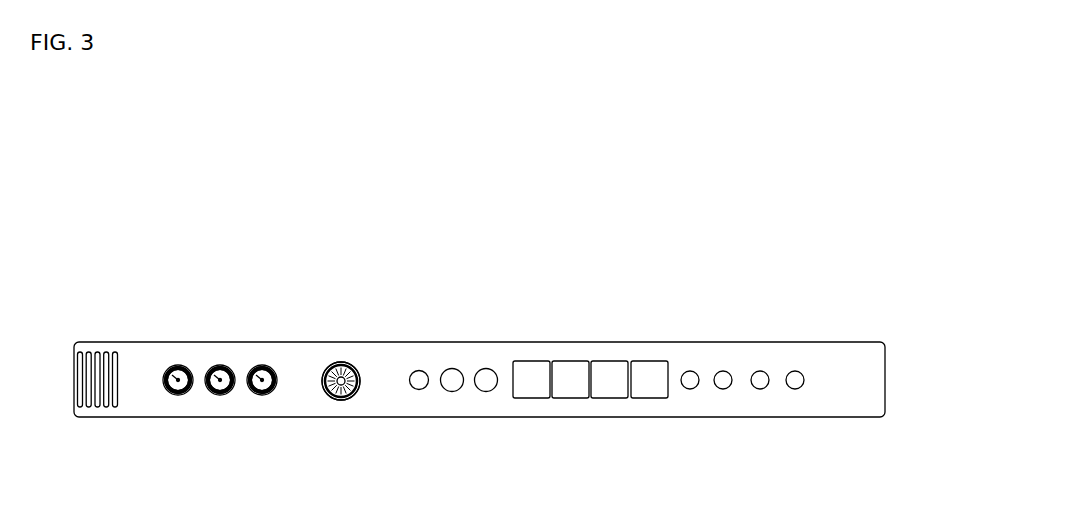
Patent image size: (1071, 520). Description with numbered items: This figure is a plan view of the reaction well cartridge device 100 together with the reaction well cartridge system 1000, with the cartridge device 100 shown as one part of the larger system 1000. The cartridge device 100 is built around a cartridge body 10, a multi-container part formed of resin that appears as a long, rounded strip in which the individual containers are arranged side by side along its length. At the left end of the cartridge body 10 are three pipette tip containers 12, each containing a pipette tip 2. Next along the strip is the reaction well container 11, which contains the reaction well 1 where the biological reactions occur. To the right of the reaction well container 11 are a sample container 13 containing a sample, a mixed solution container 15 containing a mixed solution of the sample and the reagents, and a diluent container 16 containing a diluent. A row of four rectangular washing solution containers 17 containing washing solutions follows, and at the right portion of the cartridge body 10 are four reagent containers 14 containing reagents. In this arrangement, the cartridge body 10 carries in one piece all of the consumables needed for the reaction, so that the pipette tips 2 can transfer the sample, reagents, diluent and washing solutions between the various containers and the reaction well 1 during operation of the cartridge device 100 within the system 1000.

The system 1000 is at (100, 147).
The reaction well cartridge device 100 is at (172, 246).
The cartridge body 10 is at (872, 334).
The pipette tips 2 is at (183, 367).
The pipette tip containers 12 is at (180, 395).
The reaction well 1 is at (341, 362).
The reaction well container 11 is at (357, 368).
The sample container 13 is at (419, 370).
The mixed solution container 15 is at (453, 368).
The diluent container 16 is at (486, 368).
The washing solution containers 17 is at (535, 368).
The reagent containers 14 is at (692, 372).